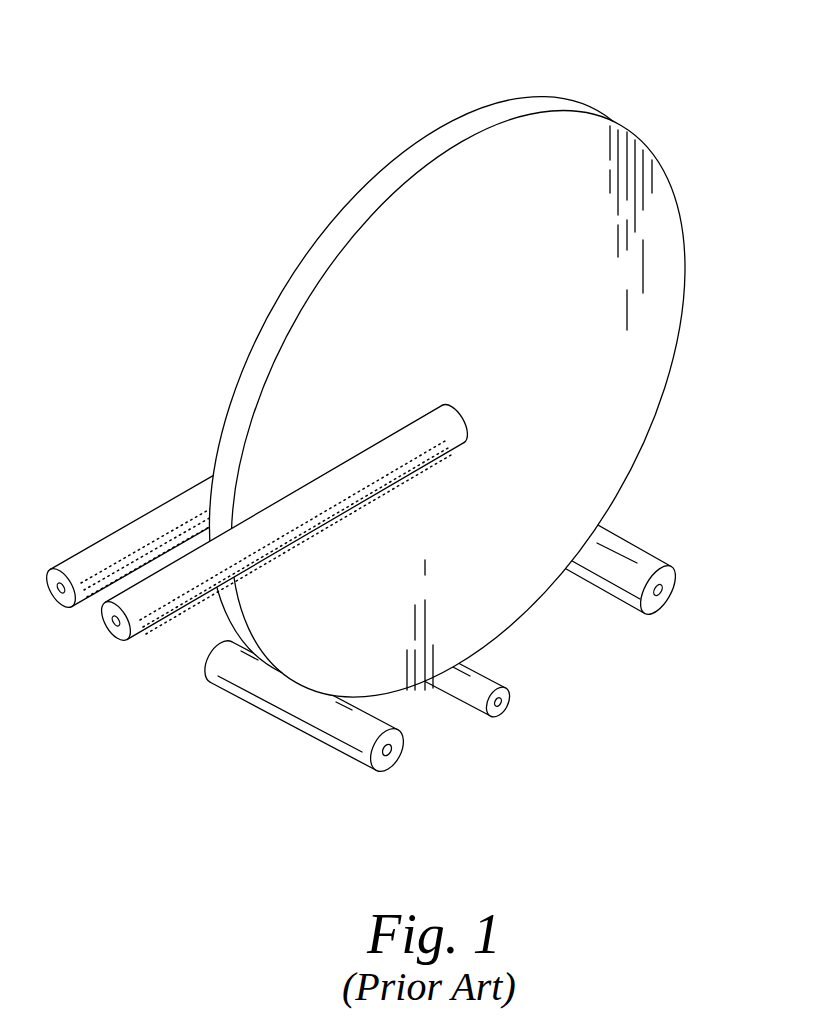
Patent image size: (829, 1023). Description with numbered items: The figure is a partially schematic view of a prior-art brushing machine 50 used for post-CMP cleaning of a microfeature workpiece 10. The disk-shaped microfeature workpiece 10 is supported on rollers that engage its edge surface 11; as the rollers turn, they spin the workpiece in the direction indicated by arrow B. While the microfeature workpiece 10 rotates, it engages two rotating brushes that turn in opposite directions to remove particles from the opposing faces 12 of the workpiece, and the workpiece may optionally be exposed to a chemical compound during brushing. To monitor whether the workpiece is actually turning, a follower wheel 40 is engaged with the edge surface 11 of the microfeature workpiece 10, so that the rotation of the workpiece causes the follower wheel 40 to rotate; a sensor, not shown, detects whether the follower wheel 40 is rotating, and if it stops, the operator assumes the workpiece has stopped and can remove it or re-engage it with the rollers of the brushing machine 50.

The microfeature workpiece 10 is at (348, 82).
The edge surface 11 is at (368, 198).
The opposing faces 12 is at (565, 98).
The follower wheel 40 is at (493, 718).
The brushing machine 50 is at (146, 726).
The arrow indicating workpiece rotation B is at (713, 183).